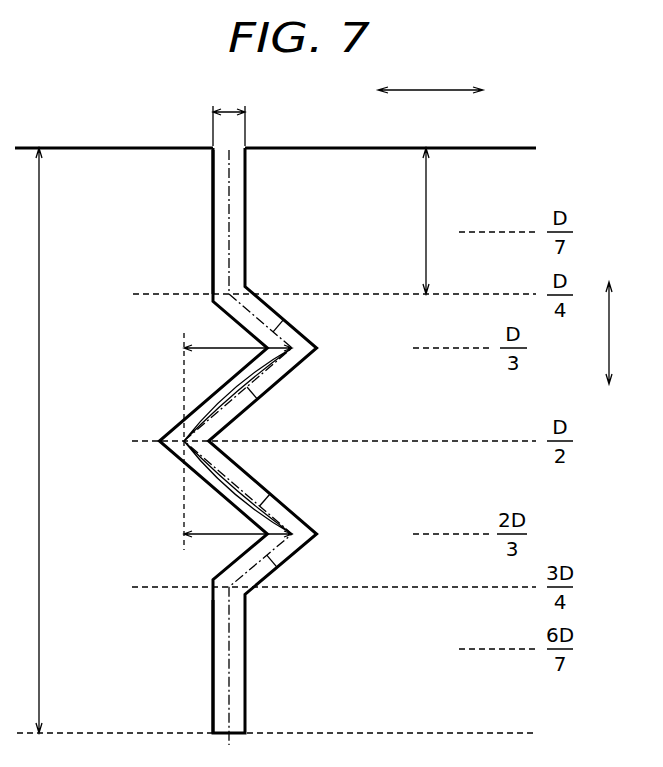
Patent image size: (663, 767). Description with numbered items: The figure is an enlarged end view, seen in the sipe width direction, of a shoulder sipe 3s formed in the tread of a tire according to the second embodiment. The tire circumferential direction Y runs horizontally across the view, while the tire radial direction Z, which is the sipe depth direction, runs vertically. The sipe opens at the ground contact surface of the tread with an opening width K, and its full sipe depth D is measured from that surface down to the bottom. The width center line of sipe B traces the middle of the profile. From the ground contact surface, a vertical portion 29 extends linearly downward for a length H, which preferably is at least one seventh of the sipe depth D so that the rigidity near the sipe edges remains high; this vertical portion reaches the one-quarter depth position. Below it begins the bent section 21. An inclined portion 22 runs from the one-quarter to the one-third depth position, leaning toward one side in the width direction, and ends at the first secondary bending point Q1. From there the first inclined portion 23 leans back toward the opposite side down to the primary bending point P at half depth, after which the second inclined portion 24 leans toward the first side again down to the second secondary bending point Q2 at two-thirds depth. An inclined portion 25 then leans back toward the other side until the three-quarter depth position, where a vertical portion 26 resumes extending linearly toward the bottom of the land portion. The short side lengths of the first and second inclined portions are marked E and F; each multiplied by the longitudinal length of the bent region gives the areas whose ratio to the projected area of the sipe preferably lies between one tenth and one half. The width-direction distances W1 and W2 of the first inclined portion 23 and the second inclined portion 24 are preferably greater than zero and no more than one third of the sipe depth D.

The shoulder sipe 3s is at (225, 160).
The width center line of sipe B is at (230, 189).
The vertical portion 29 is at (229, 229).
The bent section 21 is at (127, 294).
The inclined portion 22 is at (284, 320).
The first inclined portion 23 is at (257, 399).
The second inclined portion 24 is at (270, 494).
The inclined portion 25 is at (277, 567).
The vertical portion 26 is at (229, 656).
The first secondary bending point Q1 is at (317, 348).
The second secondary bending point Q2 is at (317, 534).
The primary bending point P is at (164, 444).
The end side (short side) length of first inclined portion E is at (230, 385).
The end side (short side) length of second inclined portion F is at (250, 481).
The opening width of sipe K is at (229, 114).
The distance in sipe width direction of first inclined portion W1 is at (238, 438).
The distance in sipe width direction of second inclined portion W2 is at (238, 547).
The sipe depth D is at (31, 440).
The length in sipe depth direction of vertical portion H is at (419, 221).
The tire circumferential direction Y is at (430, 77).
The tire radial direction Z is at (618, 333).